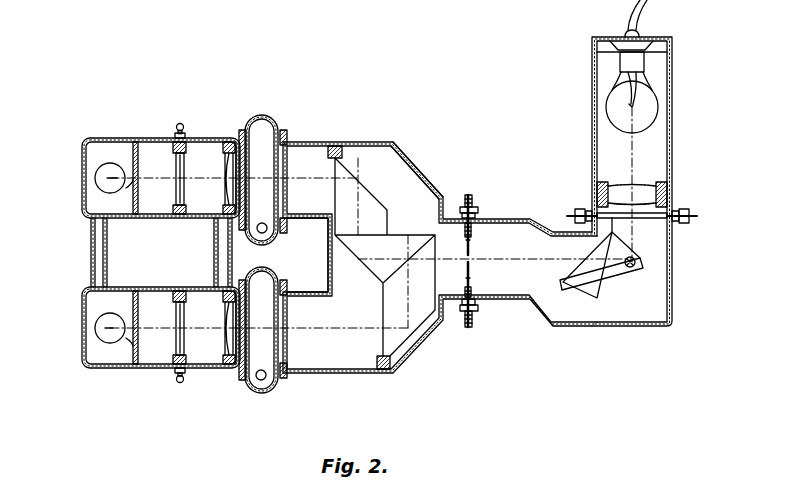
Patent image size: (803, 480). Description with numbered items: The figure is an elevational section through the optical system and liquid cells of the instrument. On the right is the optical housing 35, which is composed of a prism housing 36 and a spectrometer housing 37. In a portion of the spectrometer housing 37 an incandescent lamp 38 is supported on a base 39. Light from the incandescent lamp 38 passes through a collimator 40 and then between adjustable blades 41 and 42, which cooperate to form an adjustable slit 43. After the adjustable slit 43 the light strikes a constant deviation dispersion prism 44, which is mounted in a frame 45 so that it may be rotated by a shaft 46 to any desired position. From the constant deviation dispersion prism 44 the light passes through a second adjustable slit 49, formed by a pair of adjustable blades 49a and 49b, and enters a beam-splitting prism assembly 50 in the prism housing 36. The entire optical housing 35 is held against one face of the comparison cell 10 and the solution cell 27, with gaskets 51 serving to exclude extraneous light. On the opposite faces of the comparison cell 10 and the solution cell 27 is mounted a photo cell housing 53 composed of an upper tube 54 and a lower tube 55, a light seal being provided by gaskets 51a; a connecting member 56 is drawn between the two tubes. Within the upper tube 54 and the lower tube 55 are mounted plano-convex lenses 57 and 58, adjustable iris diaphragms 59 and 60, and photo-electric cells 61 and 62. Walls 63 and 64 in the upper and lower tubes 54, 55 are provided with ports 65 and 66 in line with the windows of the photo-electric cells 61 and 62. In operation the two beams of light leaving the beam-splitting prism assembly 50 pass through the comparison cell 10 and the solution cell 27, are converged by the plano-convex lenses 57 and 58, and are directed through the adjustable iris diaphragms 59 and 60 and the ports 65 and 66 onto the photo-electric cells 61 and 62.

The comparison cell 10 is at (268, 118).
The solution cell 27 is at (270, 392).
The optical housing 35 is at (427, 162).
The prism housing 36 is at (390, 142).
The spectrometer housing 37 is at (592, 146).
The incandescent lamp 38 is at (658, 108).
The base 39 is at (658, 36).
The collimator 40 is at (651, 183).
The adjustable blade 41 is at (645, 219).
The adjustable blade 42 is at (632, 220).
The adjustable slit 43 is at (649, 218).
The constant deviation dispersion prism 44 is at (625, 286).
The frame 45 is at (584, 292).
The shaft 46 is at (637, 263).
The adjustable slit 49 is at (471, 262).
The adjustable blade 49a is at (472, 243).
The adjustable blade 49b is at (472, 278).
The beam-splitting prism assembly 50 is at (353, 172).
The gaskets 51 is at (281, 238).
The gaskets 51a is at (238, 232).
The photo cell housing 53 is at (90, 243).
The upper tube 54 is at (96, 138).
The lower tube 55 is at (105, 369).
The connecting strut 56 is at (105, 268).
The plano-convex lens 57 is at (224, 156).
The plano-convex lens 58 is at (224, 350).
The adjustable iris diaphragm 59 is at (177, 150).
The adjustable iris diaphragm 60 is at (172, 352).
The photo-electric cell 61 is at (96, 177).
The photo-electric cell 62 is at (95, 323).
The wall 63 is at (136, 150).
The wall 64 is at (132, 368).
The port 65 is at (133, 188).
The port 66 is at (136, 336).